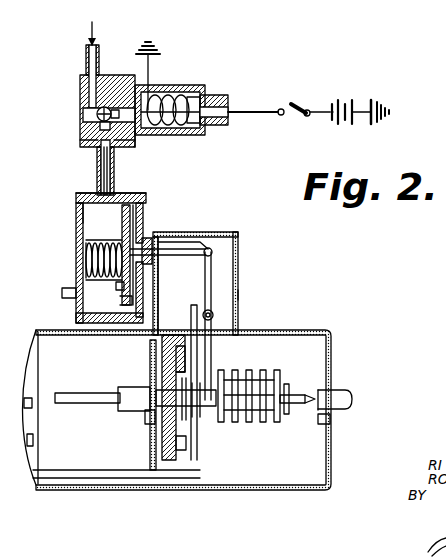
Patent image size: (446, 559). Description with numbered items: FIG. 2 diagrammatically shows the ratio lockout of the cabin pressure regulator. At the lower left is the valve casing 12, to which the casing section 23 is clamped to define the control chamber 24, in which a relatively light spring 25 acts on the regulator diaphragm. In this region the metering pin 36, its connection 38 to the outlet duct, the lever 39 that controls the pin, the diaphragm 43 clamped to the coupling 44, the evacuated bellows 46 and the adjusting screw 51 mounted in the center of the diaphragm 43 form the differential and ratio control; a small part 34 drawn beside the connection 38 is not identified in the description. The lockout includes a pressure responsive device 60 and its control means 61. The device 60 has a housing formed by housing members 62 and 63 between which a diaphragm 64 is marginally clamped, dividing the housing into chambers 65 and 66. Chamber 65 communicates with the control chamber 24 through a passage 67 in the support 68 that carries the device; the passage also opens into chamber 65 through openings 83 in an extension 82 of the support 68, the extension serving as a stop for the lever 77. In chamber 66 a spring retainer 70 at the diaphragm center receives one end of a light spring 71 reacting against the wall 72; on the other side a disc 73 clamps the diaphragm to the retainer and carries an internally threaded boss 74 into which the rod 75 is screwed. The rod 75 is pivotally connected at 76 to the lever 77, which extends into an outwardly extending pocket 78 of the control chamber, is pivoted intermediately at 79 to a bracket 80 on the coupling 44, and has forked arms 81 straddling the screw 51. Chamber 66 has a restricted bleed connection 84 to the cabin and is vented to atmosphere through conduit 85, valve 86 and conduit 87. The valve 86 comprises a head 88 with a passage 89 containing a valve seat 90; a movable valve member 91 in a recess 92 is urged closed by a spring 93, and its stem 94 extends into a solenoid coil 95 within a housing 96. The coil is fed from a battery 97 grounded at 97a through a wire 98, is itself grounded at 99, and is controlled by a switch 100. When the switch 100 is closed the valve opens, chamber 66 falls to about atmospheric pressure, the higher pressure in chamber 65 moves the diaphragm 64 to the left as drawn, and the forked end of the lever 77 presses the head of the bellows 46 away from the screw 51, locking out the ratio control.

The valve casing 12 is at (88, 486).
The casing section 23 is at (329, 450).
The control chamber 24 is at (265, 456).
The relatively light spring 25 is at (205, 412).
The bearing block 34 is at (330, 418).
The metering pin 36 is at (317, 392).
The connection 38 is at (338, 400).
The lever 39 is at (284, 390).
The diaphragm 43 is at (180, 370).
The coupling 44 is at (176, 462).
The evacuated bellows 46 is at (252, 386).
The adjusting screw 51 is at (190, 421).
The pressure responsive device 60 is at (75, 232).
The control means 61 is at (137, 151).
The housing member 62 is at (131, 206).
The housing member 63 is at (86, 270).
The movable wall or diaphragm 64 is at (120, 234).
The chamber 65 is at (134, 216).
The chamber 66 is at (95, 315).
The passage 67 is at (165, 244).
The support 68 is at (186, 233).
The spring retainer 70 is at (86, 252).
The relatively light spring 71 is at (116, 286).
The wall 72 is at (78, 196).
The disc or clamping member 73 is at (125, 305).
The internally threaded boss 74 is at (159, 280).
The pin or rod 75 is at (170, 256).
The pivotal connection 76 is at (213, 258).
The lever 77 is at (212, 278).
The outwardly extending pocket 78 is at (222, 294).
The pivot 79 is at (214, 318).
The bracket 80 is at (190, 307).
The arms 81 is at (250, 378).
The extension 82 is at (162, 336).
The openings 83 is at (147, 238).
The bleed connection 84 is at (62, 294).
The conduit 85 is at (97, 170).
The valve 86 is at (81, 120).
The conduit 87 is at (86, 52).
The head 88 is at (115, 75).
The passage 89 is at (96, 142).
The valve seat 90 is at (100, 109).
The movable valve member 91 is at (98, 116).
The recess 92 is at (114, 163).
The spring 93 is at (100, 126).
The stem 94 is at (176, 98).
The solenoid coil 95 is at (210, 96).
The housing 96 is at (147, 94).
The battery 97 is at (352, 100).
The ground 97a is at (380, 103).
The wire 98 is at (248, 111).
The ground 99 is at (152, 42).
The switch 100 is at (296, 103).